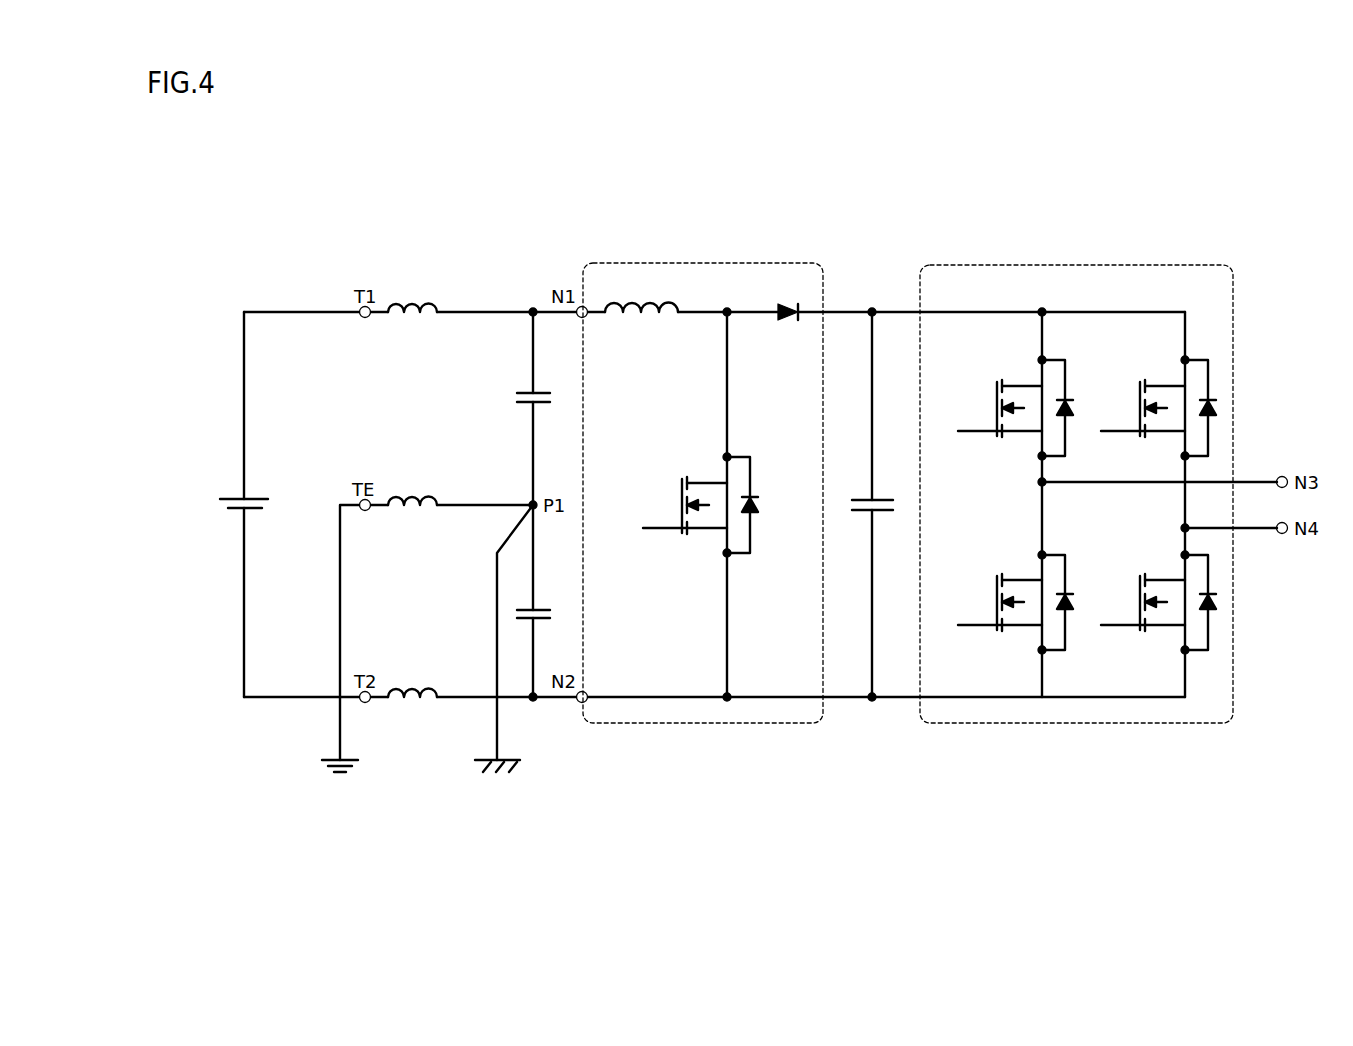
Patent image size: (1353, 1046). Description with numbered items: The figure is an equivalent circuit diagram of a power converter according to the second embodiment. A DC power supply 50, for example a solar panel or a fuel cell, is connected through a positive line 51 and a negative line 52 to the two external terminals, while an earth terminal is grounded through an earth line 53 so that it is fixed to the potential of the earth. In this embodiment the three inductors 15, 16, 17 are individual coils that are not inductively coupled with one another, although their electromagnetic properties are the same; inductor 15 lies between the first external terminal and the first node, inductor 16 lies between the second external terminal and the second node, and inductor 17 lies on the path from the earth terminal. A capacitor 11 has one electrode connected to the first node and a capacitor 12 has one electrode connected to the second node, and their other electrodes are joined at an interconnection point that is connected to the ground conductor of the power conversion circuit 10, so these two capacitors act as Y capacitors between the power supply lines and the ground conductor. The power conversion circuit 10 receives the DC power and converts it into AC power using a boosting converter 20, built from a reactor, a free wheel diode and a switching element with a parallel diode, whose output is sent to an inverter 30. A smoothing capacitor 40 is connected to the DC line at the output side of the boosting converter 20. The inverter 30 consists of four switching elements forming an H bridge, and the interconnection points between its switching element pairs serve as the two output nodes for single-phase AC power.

The power conversion circuit 10 is at (999, 201).
The capacitor 11 is at (550, 408).
The capacitor 12 is at (548, 601).
The inductor 15 is at (428, 287).
The inductor 16 is at (433, 712).
The inductor 17 is at (452, 487).
The boosting converter 20 is at (790, 463).
The inverter 30 is at (1074, 477).
The smoothing capacitor 40 is at (886, 504).
The DC power supply 50 is at (223, 504).
The positive line 51 is at (410, 295).
The negative line 52 is at (410, 715).
The earth line 53 is at (318, 627).